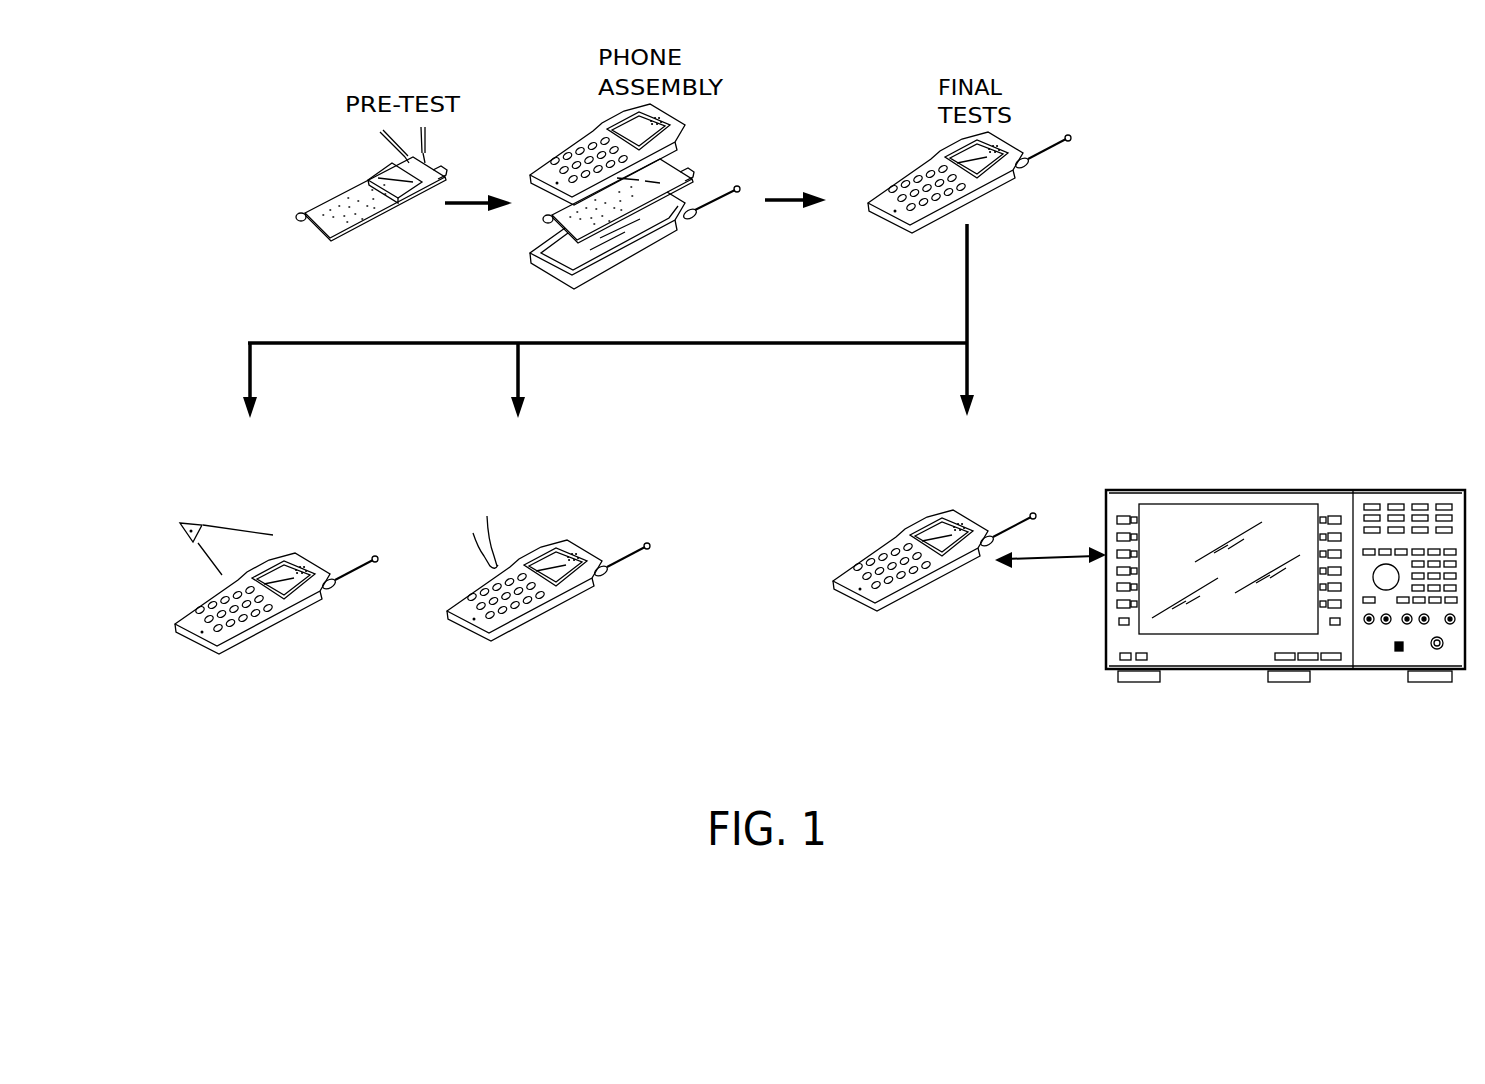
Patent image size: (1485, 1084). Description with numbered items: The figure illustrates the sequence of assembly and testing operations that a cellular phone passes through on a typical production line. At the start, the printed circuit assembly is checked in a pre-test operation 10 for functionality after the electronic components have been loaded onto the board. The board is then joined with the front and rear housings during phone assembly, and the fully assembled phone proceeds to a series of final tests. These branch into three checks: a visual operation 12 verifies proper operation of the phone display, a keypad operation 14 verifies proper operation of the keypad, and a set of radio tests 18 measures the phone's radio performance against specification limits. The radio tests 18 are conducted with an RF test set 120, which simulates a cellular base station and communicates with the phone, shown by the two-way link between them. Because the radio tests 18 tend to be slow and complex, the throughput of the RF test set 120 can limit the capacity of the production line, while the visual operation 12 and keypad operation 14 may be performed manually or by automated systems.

The pre-test operation 10 is at (421, 255).
The visual operation 12 is at (289, 543).
The keypad operation 14 is at (558, 537).
The radio tests 18 is at (969, 517).
The RF test set 120 is at (1253, 487).